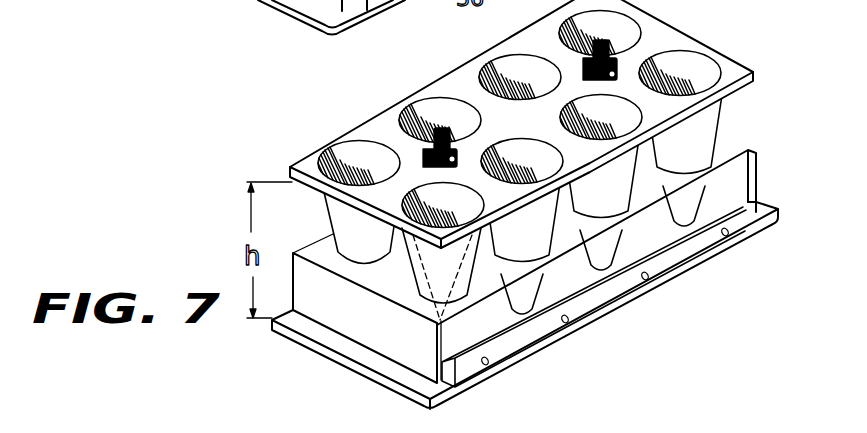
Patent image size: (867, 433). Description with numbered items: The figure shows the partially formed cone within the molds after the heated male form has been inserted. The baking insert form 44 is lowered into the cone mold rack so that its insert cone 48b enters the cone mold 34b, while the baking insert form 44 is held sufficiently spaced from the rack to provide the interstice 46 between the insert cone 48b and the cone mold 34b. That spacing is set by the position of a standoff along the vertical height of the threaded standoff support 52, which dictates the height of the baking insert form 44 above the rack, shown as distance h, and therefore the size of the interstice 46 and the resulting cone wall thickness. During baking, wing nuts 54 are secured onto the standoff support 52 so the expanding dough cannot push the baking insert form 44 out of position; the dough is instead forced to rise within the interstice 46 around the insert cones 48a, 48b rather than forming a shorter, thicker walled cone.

The baking insert form 44 is at (300, 163).
The insert cone 48a is at (359, 163).
The insert cone 48b is at (443, 252).
The standoff support 52 is at (443, 128).
The wing nuts 54 is at (615, 72).
The cone mold 34b is at (428, 293).
The interstice 46 is at (561, 347).